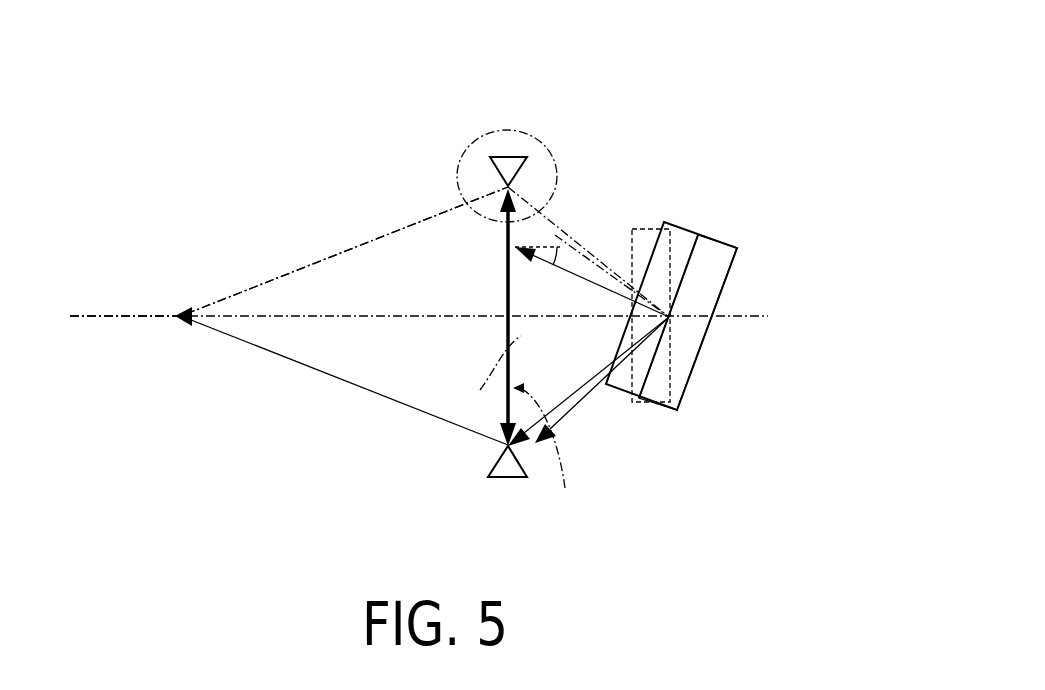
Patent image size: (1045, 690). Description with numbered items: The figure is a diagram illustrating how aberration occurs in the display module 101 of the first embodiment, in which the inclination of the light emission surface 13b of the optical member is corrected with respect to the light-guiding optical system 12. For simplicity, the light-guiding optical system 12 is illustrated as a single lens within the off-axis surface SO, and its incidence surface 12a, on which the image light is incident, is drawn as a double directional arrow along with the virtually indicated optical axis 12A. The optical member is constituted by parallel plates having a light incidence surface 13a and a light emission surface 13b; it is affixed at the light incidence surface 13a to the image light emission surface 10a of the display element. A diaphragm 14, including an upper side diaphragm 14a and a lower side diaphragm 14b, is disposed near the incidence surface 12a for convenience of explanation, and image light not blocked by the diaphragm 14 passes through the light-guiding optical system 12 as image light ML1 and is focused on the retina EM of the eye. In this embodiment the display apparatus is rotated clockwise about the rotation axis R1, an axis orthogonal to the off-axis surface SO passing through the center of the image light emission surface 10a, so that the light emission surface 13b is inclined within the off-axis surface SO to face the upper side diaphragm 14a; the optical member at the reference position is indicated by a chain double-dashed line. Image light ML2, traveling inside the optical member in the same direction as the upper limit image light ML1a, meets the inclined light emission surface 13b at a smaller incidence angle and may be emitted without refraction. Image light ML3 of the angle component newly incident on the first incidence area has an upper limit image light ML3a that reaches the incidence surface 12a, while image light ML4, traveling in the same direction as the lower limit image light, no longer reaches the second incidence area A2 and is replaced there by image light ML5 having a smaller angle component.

The display module 101 is at (754, 121).
The diaphragm 14 is at (497, 300).
The upper side diaphragm 14a is at (500, 158).
The lower side diaphragm 14b is at (502, 478).
The light-guiding optical system 12 is at (459, 332).
The incidence surface 12a is at (437, 424).
The optical axis 12A is at (90, 318).
The retina EM is at (175, 318).
The off-axis surface SO is at (330, 218).
The image light ML1 is at (588, 199).
The upper limit image light ML1a is at (587, 250).
The image light ML3 is at (620, 214).
The upper limit image light ML3a is at (601, 264).
The image light ML2 is at (610, 288).
The image light ML4 is at (593, 382).
The image light ML5 is at (567, 392).
The second incidence area A2 is at (549, 448).
The image light emission surface 10a is at (650, 348).
The rotation axis R1 is at (670, 318).
The light incidence surface 13a is at (688, 283).
The light emission surface 13b is at (637, 250).